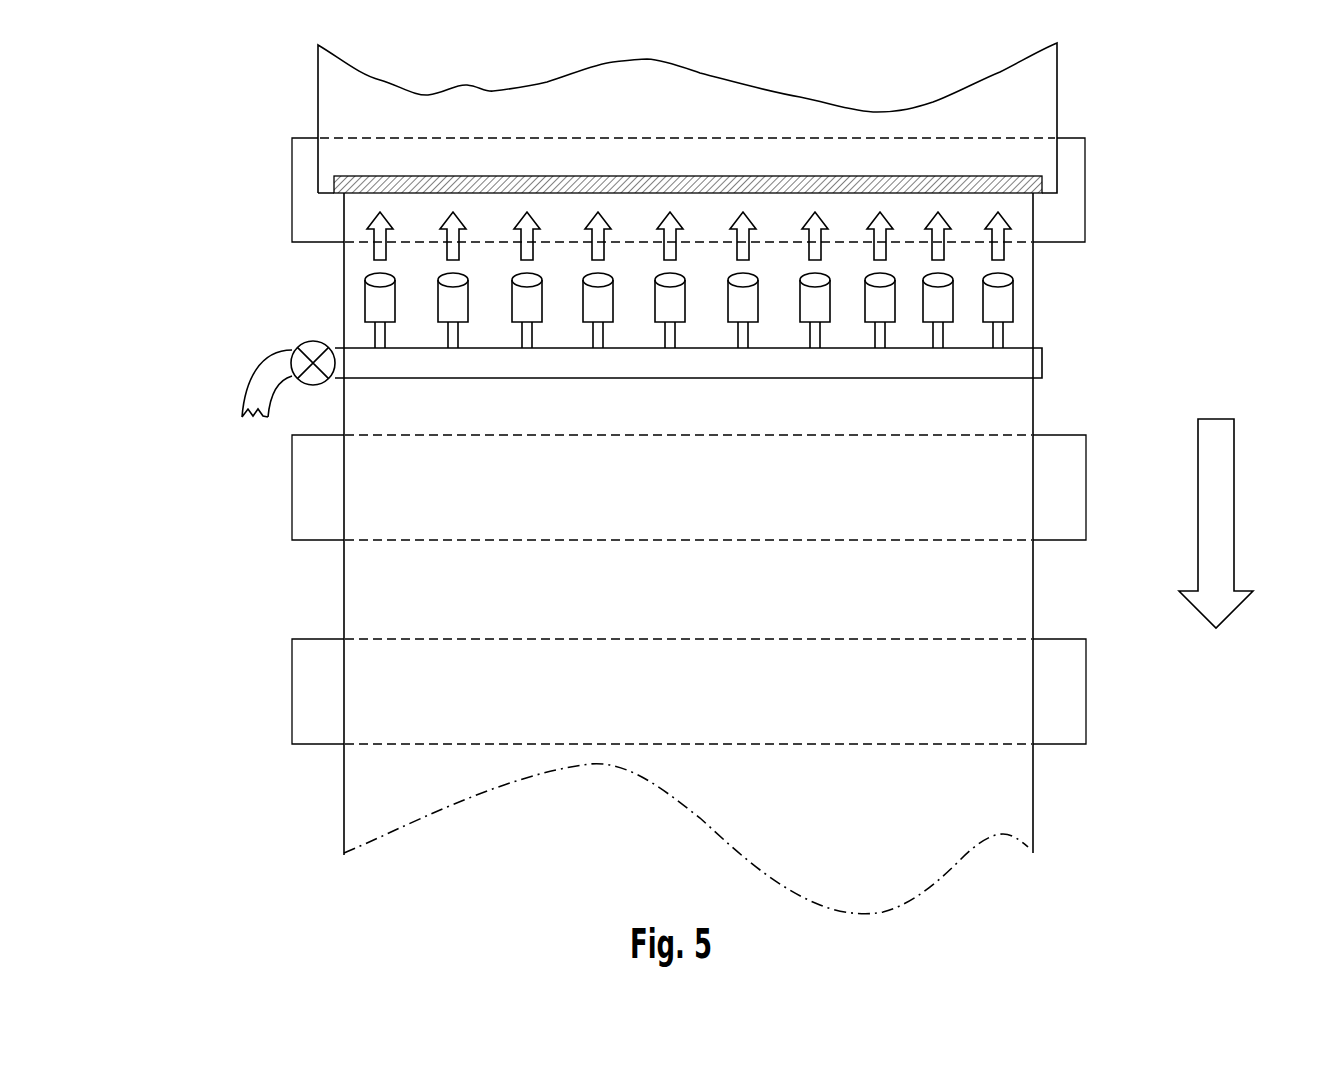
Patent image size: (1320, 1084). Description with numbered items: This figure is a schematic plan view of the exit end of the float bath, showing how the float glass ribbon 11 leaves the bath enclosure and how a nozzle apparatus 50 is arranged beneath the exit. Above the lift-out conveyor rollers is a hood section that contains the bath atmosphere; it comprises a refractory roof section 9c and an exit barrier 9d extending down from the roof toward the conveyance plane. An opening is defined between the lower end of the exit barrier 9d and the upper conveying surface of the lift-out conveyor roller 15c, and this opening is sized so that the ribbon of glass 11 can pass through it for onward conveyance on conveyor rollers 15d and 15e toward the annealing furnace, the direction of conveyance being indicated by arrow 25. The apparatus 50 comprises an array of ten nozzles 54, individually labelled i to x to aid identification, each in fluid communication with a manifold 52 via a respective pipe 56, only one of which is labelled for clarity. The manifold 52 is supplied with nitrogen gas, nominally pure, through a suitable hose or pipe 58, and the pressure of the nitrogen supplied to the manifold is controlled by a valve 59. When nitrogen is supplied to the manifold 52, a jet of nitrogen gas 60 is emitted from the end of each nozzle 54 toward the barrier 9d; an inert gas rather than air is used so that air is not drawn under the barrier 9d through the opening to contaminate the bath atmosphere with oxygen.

The refractory roof section 9c is at (1033, 102).
The exit barrier 9d is at (1003, 178).
The float glass ribbon 11 is at (1015, 785).
The lift-out conveyor roller 15c is at (305, 166).
The conveyor roller 15d is at (317, 513).
The conveyor roller 15e is at (305, 691).
The direction of conveyance arrow 25 is at (1217, 503).
The apparatus 50 is at (1103, 340).
The manifold 52 is at (1022, 369).
The nozzle 54 is at (365, 298).
The pipe 56 is at (377, 340).
The hose or pipe 58 is at (255, 392).
The valve 59 is at (310, 345).
The jet of nitrogen gas 60 is at (380, 243).